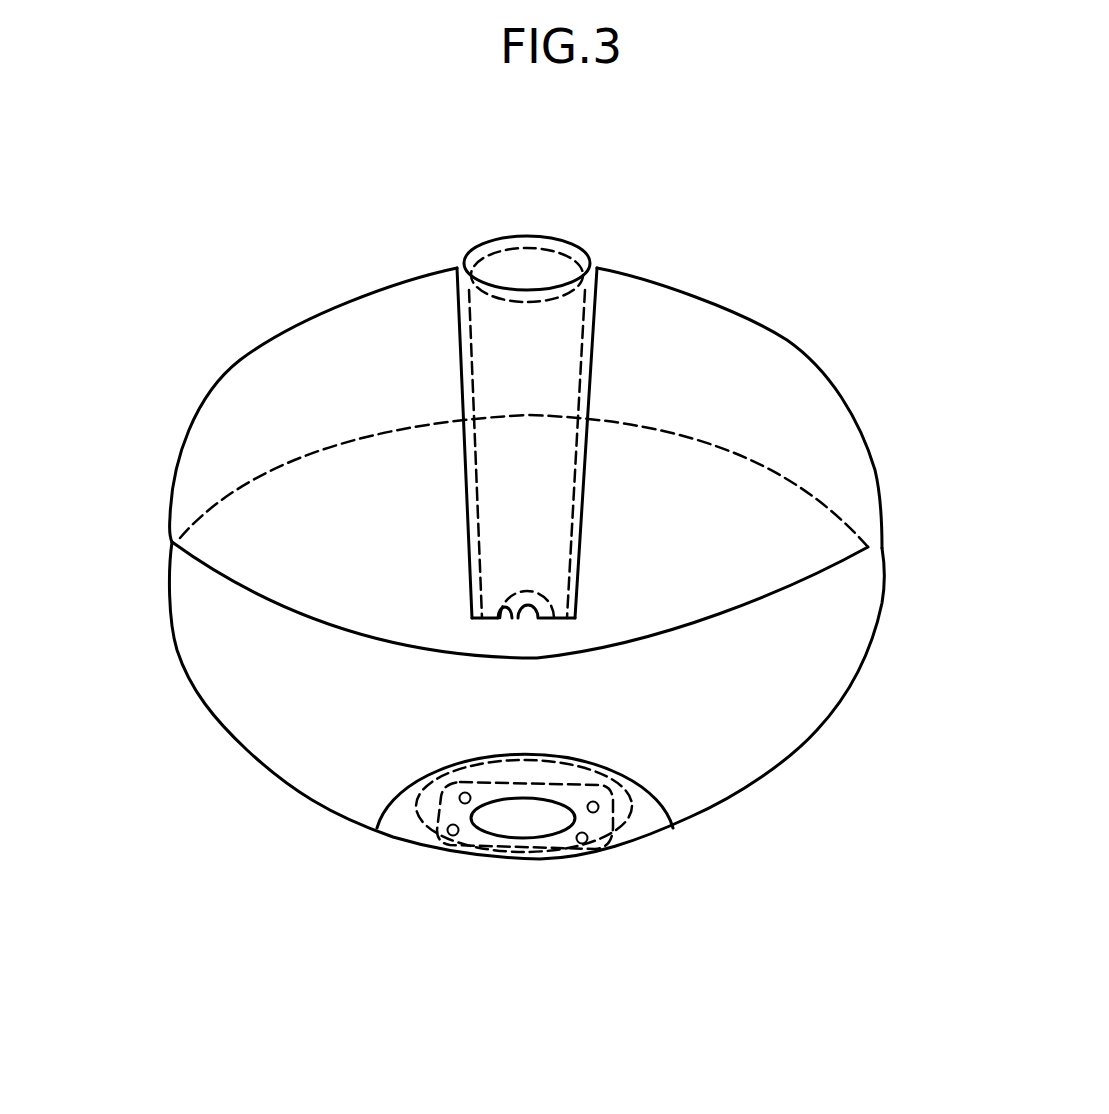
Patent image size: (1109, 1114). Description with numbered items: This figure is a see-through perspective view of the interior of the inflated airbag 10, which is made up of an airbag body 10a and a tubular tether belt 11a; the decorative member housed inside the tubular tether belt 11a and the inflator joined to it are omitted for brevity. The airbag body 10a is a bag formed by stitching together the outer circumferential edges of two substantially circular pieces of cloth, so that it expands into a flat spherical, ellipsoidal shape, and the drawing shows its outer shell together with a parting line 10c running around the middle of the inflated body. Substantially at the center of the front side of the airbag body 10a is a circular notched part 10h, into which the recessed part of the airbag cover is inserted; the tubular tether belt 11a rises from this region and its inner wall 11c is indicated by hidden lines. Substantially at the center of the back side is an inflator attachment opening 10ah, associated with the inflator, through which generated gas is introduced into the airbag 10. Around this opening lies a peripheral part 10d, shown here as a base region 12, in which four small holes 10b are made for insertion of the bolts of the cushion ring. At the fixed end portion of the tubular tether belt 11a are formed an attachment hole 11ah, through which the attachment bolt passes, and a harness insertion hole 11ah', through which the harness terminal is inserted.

The airbag 10 is at (377, 231).
The airbag body 10a is at (773, 388).
The parting line / seam of tank 10c is at (763, 462).
The notched part 10h is at (527, 272).
The tubular tether belt 11a is at (527, 492).
The inner sleeve of filler neck 11c is at (525, 303).
The harness insertion hole 11ah' is at (286, 625).
The attachment hole 11ah is at (317, 675).
The base mounting portion 12 is at (413, 786).
The peripheral part 10d is at (592, 820).
The inflator attachment opening 10ah is at (523, 816).
The small holes 10b is at (584, 842).